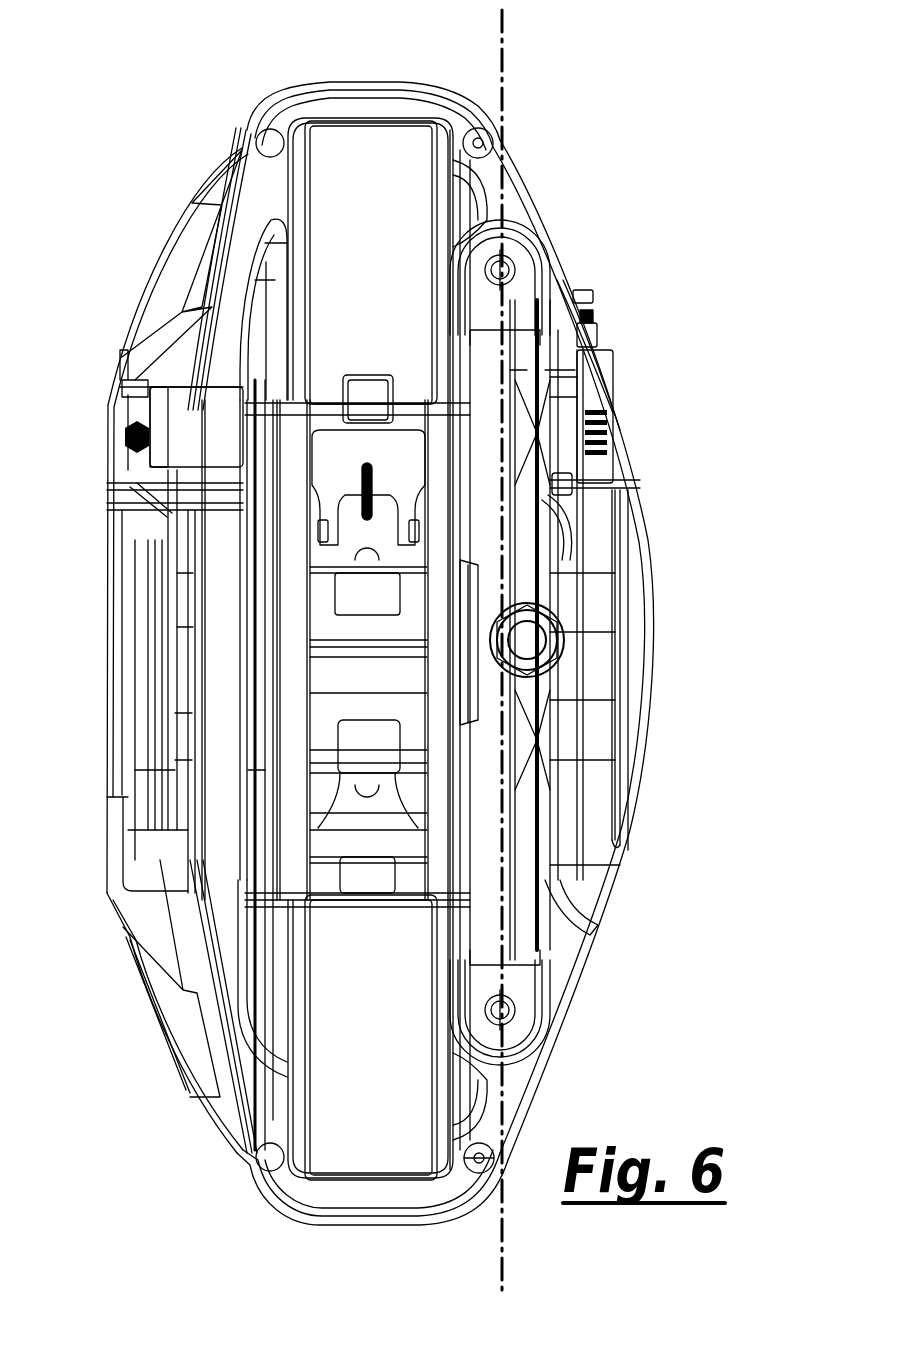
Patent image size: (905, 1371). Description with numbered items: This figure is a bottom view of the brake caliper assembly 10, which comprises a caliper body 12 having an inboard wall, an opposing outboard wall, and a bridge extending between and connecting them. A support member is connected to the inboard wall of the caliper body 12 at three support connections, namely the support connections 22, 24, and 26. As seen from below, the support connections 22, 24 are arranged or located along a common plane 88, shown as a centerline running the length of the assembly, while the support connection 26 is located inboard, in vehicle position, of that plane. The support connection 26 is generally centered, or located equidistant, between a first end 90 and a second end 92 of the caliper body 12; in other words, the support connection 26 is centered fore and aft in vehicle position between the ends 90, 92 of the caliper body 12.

The brake caliper assembly 10 is at (134, 94).
The caliper body 12 is at (173, 243).
The support connection 22 is at (526, 252).
The support connection 24 is at (532, 1019).
The support connection 26 is at (580, 653).
The common plane 88 is at (510, 18).
The first end 90 is at (320, 80).
The second end 92 is at (337, 1223).